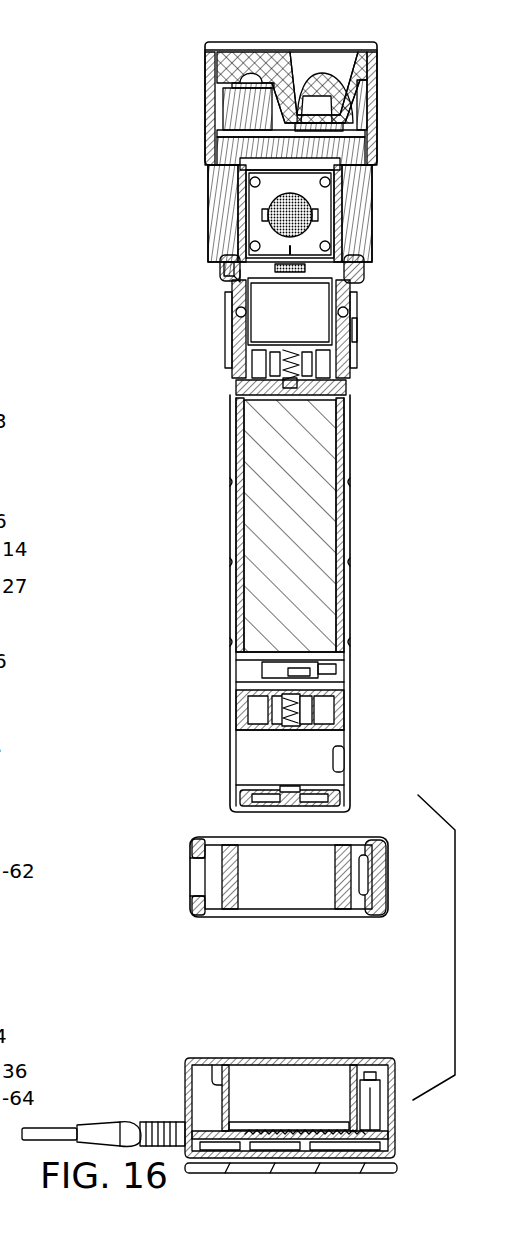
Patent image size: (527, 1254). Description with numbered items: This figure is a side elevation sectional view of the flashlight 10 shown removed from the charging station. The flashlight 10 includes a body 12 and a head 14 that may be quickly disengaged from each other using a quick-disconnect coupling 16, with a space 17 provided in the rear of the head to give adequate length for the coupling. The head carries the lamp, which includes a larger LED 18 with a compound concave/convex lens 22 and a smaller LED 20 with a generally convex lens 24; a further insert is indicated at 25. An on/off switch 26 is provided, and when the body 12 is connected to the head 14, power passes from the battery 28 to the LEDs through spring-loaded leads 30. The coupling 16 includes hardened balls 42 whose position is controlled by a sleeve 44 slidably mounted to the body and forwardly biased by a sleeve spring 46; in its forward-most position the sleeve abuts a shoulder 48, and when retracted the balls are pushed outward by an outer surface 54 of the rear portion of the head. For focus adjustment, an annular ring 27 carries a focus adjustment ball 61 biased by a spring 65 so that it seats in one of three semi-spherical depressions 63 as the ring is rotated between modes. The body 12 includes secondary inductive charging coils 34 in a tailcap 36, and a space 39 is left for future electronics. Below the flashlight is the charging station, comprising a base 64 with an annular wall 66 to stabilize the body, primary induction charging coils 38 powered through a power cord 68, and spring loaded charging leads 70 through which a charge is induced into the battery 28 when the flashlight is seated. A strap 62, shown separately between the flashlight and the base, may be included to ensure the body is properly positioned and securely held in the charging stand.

The flashlight 10 is at (190, 200).
The body 12 is at (352, 441).
The head 14 is at (374, 226).
The quick-disconnect coupling 16 is at (202, 338).
The space 17 is at (250, 317).
The larger LED 18 is at (322, 128).
The smaller LED 20 is at (250, 72).
The compound concave/convex lens 22 is at (338, 115).
The convex lens 24 is at (242, 47).
The dome insert 25 is at (290, 115).
The on/off switch 26 is at (305, 218).
The annular ring 27 is at (362, 279).
The battery 28 is at (320, 505).
The spring-loaded leads 30 is at (350, 386).
The secondary inductive charging coils 34 is at (316, 802).
The tailcap 36 is at (230, 762).
The primary induction charging coils 38 is at (312, 1128).
The space 39 is at (338, 755).
The balls 42 is at (238, 312).
The sleeve 44 is at (232, 340).
The sleeve spring 46 is at (358, 341).
The shoulder 48 is at (346, 311).
The outer surface 54 is at (355, 336).
The focus adjustment ball 61 is at (228, 271).
The strap 62 is at (389, 878).
The semi-spherical depression 63 is at (226, 262).
The base 64 is at (398, 1082).
The spring 65 is at (236, 280).
The annular wall 66 is at (230, 1086).
The power cord 68 is at (150, 1124).
The spring loaded charging leads 70 is at (300, 706).